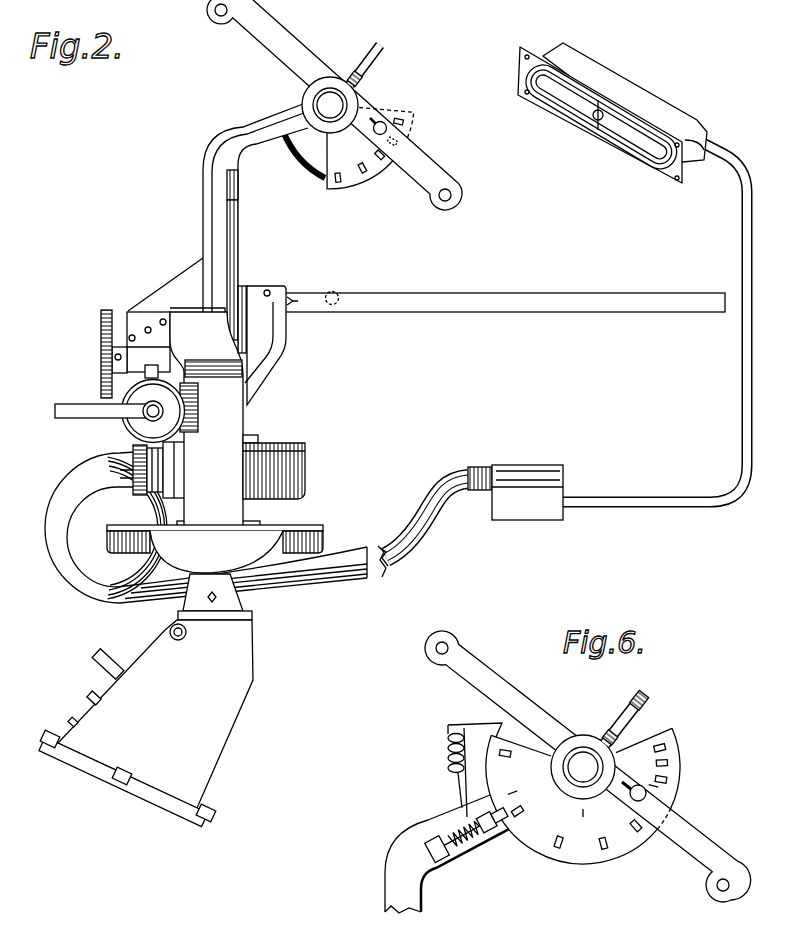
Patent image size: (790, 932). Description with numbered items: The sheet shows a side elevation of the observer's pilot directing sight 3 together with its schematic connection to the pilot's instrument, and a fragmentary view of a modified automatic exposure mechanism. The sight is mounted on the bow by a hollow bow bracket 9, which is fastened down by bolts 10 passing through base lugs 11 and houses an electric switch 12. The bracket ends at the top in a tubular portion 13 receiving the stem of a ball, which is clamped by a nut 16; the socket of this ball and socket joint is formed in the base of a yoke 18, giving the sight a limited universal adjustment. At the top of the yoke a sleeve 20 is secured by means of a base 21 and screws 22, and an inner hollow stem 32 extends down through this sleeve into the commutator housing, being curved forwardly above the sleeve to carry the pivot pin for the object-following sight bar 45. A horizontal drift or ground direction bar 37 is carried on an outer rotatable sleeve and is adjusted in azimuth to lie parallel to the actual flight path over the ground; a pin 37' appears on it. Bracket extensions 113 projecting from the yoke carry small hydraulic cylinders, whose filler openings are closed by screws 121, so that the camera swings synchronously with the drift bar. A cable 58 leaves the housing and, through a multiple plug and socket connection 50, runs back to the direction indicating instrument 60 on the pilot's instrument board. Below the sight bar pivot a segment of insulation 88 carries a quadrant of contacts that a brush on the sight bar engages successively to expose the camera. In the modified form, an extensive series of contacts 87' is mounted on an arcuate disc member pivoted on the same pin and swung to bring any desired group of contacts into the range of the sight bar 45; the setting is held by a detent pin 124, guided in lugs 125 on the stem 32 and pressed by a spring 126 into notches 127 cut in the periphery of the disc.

In FIG. 2, the pilot directing sight 3 is at (160, 195).
In FIG. 2, the bow bracket 9 is at (240, 689).
In FIG. 2, the bolts 10 is at (98, 775).
In FIG. 2, the base lugs 11 is at (197, 822).
In FIG. 2, the electric switch 12 is at (102, 688).
In FIG. 2, the tubular portion 13 is at (243, 598).
In FIG. 2, the nut 16 is at (213, 602).
In FIG. 2, the yoke 18 is at (240, 433).
In FIG. 2, the sleeve 20 is at (233, 247).
In FIG. 2, the base 21 is at (213, 313).
In FIG. 2, the screws 22 is at (180, 311).
In FIG. 2, the hollow stem 32 is at (222, 128).
In FIG. 6, the hollow stem 32 is at (393, 887).
In FIG. 2, the drift bar 37 is at (505, 289).
In FIG. 2, the pin 37' is at (346, 284).
In FIG. 6, the object-following sight bar 45 is at (705, 837).
In FIG. 2, the multiple plug and socket connection 50 is at (540, 466).
In FIG. 2, the cable 58 is at (388, 548).
In FIG. 2, the direction indicating instrument 60 is at (665, 98).
In FIG. 6, the contacts 87' is at (637, 831).
In FIG. 2, the segment of insulation 88 is at (360, 183).
In FIG. 2, the bracket extensions 113 is at (198, 415).
In FIG. 2, the screws 121 is at (102, 373).
In FIG. 6, the detent pin 124 is at (482, 842).
In FIG. 6, the lugs 125 is at (449, 842).
In FIG. 6, the spring 126 is at (469, 853).
In FIG. 6, the notches 127 is at (537, 853).